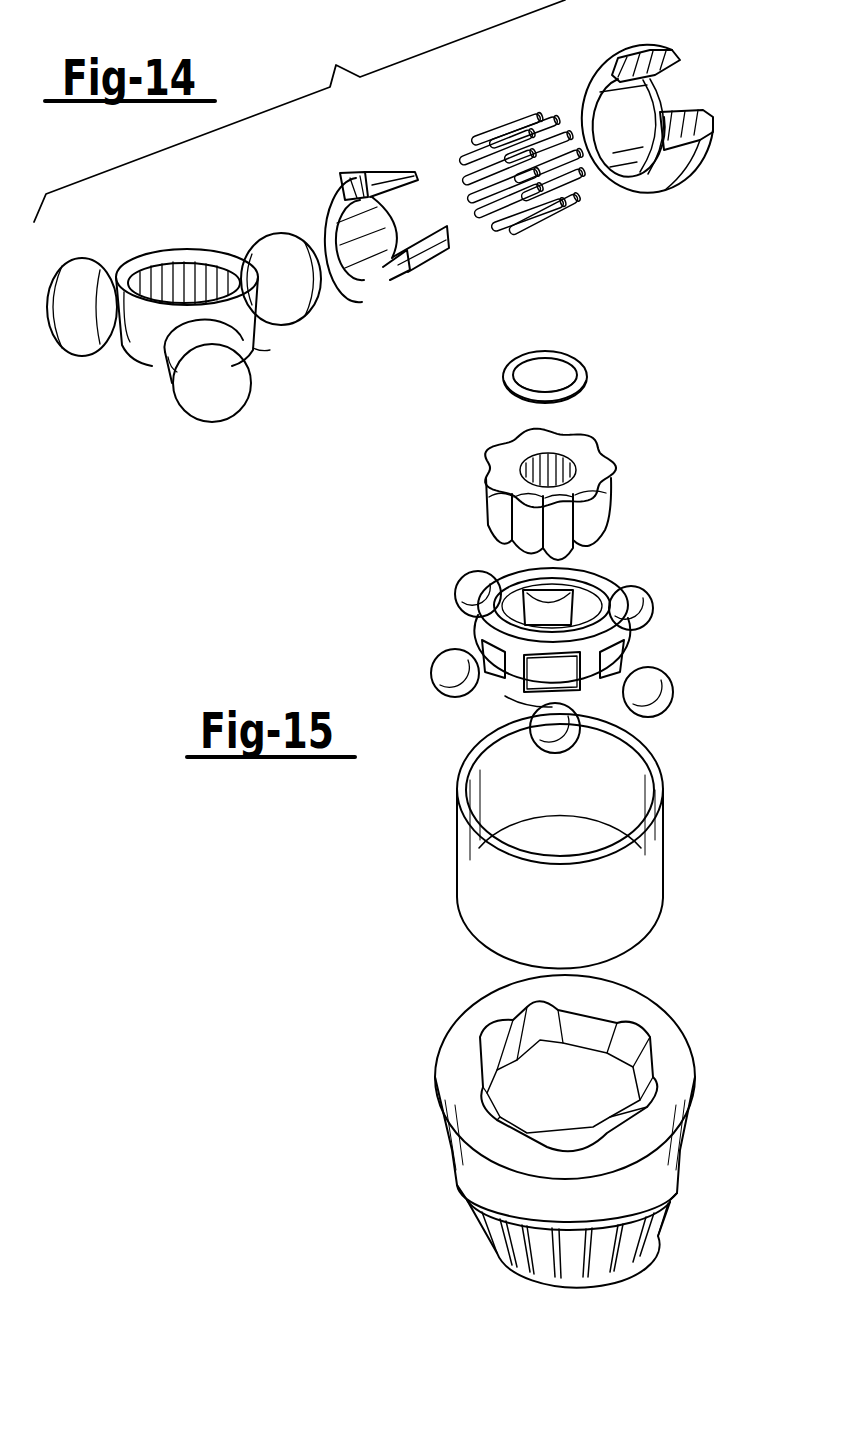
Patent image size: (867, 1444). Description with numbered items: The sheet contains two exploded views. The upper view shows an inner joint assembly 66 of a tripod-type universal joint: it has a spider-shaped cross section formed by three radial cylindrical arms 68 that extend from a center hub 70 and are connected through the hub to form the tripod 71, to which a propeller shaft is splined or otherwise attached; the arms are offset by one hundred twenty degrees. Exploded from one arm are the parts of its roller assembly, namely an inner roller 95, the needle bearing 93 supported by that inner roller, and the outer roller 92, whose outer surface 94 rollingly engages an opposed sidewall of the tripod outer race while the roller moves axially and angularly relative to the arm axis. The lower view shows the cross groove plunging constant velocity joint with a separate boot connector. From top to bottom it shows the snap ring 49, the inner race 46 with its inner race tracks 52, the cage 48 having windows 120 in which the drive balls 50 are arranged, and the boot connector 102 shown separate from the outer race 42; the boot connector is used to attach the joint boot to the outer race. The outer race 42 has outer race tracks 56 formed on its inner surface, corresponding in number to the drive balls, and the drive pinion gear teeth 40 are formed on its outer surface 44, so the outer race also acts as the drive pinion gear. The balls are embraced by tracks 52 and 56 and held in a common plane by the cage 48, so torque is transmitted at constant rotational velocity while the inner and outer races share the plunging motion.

In FIG. 14, the inner joint assembly 66 is at (299, 111).
In FIG. 14, the center hub 70 is at (137, 365).
In FIG. 14, the tripod 71 is at (253, 348).
In FIG. 14, the arms 68 is at (223, 403).
In FIG. 14, the inner roller 95 is at (372, 283).
In FIG. 14, the needle bearing 93 is at (565, 207).
In FIG. 14, the outer roller 92 is at (593, 77).
In FIG. 14, the outer surface 94 is at (690, 167).
In FIG. 15, the snap ring 49 is at (582, 372).
In FIG. 15, the inner race track 52 is at (587, 458).
In FIG. 15, the inner race 46 is at (602, 510).
In FIG. 15, the cage 48 is at (626, 634).
In FIG. 15, the drive balls 50 is at (657, 697).
In FIG. 15, the windows 120 is at (500, 684).
In FIG. 15, the boot connector 102 is at (635, 893).
In FIG. 15, the outer race track 56 is at (633, 1040).
In FIG. 15, the outer race 42 is at (660, 1162).
In FIG. 15, the outer surface 44 is at (633, 1252).
In FIG. 15, the teeth 40 is at (587, 1272).